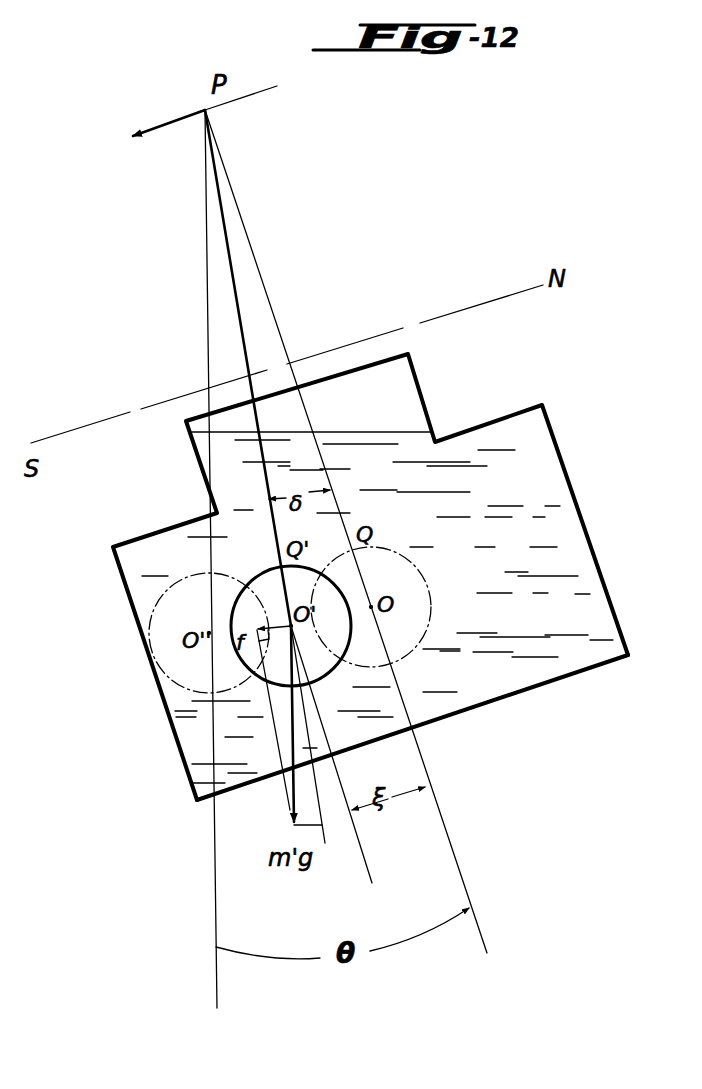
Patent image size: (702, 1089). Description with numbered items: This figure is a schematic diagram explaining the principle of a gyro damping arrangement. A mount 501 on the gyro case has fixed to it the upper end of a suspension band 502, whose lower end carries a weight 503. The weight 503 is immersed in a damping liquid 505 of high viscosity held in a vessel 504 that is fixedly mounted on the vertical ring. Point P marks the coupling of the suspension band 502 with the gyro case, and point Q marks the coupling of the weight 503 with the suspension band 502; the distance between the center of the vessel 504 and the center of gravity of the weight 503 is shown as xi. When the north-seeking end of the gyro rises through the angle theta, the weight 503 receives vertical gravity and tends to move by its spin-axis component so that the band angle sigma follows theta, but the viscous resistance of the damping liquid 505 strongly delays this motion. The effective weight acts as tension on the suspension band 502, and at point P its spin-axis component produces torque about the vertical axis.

The mount 501 is at (268, 95).
The suspension band 502 is at (234, 297).
The weight 503 is at (432, 607).
The vessel 504 is at (546, 408).
The damping liquid 505 is at (549, 680).